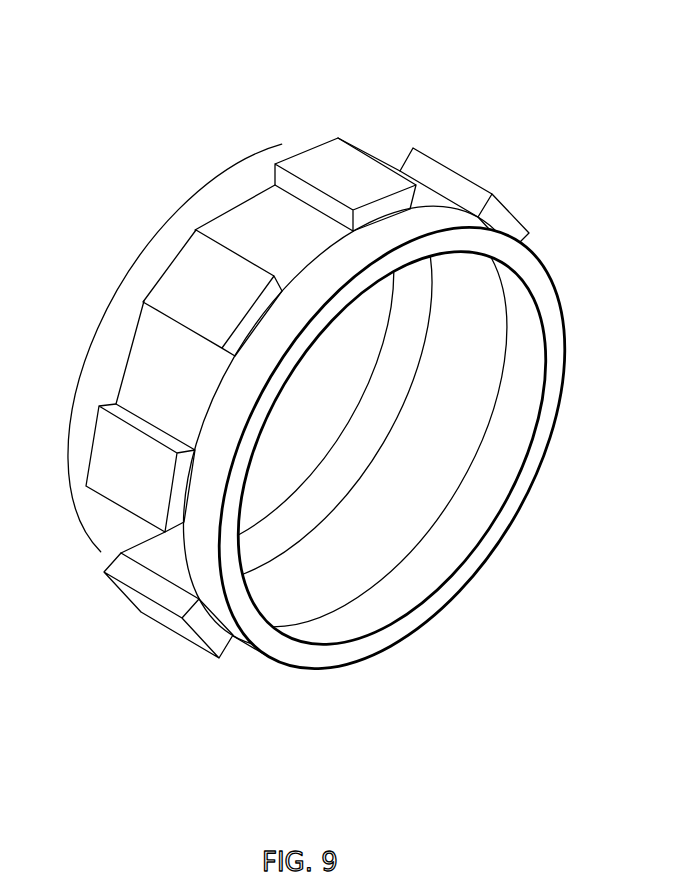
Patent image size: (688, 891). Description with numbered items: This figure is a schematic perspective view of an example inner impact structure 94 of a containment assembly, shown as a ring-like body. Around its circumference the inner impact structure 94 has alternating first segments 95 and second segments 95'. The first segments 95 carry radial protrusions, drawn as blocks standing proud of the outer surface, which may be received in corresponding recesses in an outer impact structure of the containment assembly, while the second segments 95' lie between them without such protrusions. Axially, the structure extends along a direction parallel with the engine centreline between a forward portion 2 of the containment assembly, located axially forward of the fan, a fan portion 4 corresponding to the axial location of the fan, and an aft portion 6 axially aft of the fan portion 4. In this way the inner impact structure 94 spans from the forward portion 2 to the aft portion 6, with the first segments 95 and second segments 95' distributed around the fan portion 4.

The forward portion 2 is at (126, 338).
The fan portion 4 is at (258, 215).
The aft portion 6 is at (462, 215).
The inner impact structure 94 is at (183, 208).
The first segments 95 is at (345, 148).
The second segments 95' is at (418, 121).